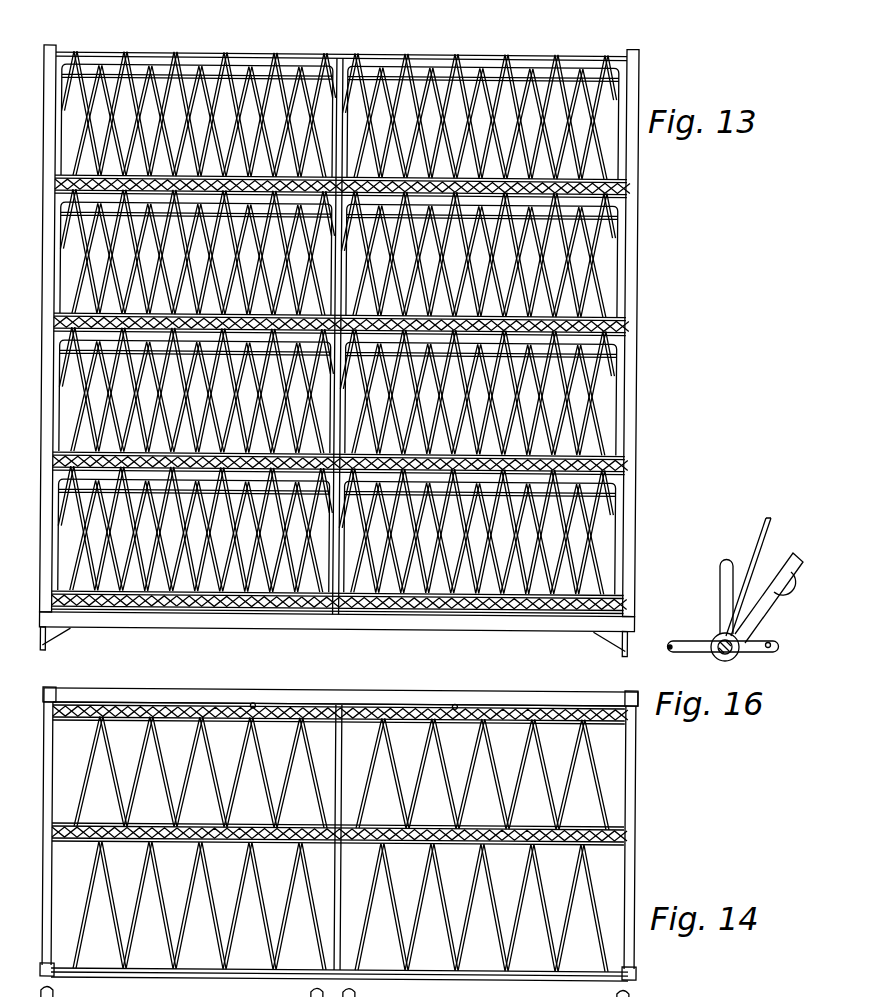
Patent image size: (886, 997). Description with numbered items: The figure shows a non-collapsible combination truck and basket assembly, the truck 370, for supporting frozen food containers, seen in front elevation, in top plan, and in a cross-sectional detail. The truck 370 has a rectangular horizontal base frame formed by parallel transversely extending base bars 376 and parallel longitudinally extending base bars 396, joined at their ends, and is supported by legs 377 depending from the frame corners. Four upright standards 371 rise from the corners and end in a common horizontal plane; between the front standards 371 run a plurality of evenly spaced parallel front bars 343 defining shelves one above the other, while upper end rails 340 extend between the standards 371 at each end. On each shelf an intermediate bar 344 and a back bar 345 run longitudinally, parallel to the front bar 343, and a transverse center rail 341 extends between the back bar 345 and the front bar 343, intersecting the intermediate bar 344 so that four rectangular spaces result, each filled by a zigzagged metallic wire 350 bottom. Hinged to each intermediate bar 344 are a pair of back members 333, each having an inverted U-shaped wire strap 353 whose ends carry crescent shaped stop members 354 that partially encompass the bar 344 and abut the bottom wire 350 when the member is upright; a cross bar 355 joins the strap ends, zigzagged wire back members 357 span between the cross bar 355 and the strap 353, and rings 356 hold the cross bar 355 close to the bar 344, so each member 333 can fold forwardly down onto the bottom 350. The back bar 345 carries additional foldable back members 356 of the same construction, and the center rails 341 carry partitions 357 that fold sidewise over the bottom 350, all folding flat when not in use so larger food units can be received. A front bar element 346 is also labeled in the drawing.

In FIG. 13, the back member 333 is at (300, 48).
In FIG. 14, the back member 333 is at (586, 839).
In FIG. 14, the upper end rail 340 is at (637, 853).
In FIG. 13, the transverse center rail 341 is at (340, 612).
In FIG. 13, the front bar 343 is at (467, 598).
In FIG. 14, the front bar 343 is at (485, 978).
In FIG. 16, the intermediate bar 344 is at (752, 622).
In FIG. 14, the intermediate bar 344 is at (338, 840).
In FIG. 13, the back bar 345 is at (626, 193).
In FIG. 14, the back bar 345 is at (356, 707).
In FIG. 14, the top beam 346 is at (228, 702).
In FIG. 13, the zigzagged metallic wire 350 is at (626, 177).
In FIG. 16, the zigzagged metallic wire 350 is at (752, 648).
In FIG. 14, the zigzagged metallic wire 350 is at (435, 753).
In FIG. 13, the inverted U-shaped wire strap 353 is at (198, 62).
In FIG. 16, the inverted U-shaped wire strap 353 is at (720, 585).
In FIG. 16, the crescent shaped stop member 354 is at (733, 657).
In FIG. 16, the cross bar 355 is at (737, 605).
In FIG. 16, the ring 356 is at (778, 558).
In FIG. 14, the ring 356 is at (253, 701).
In FIG. 16, the zigzagged wire back member 357 is at (764, 540).
In FIG. 14, the zigzagged wire back member 357 is at (258, 978).
In FIG. 13, the truck 370 is at (641, 279).
In FIG. 13, the upright standard 371 is at (52, 45).
In FIG. 14, the upright standard 371 is at (48, 689).
In FIG. 14, the transversely extending base bar 376 is at (637, 809).
In FIG. 13, the supporting leg 377 is at (50, 644).
In FIG. 13, the longitudinally extending base bar 396 is at (397, 605).
In FIG. 14, the longitudinally extending base bar 396 is at (307, 707).